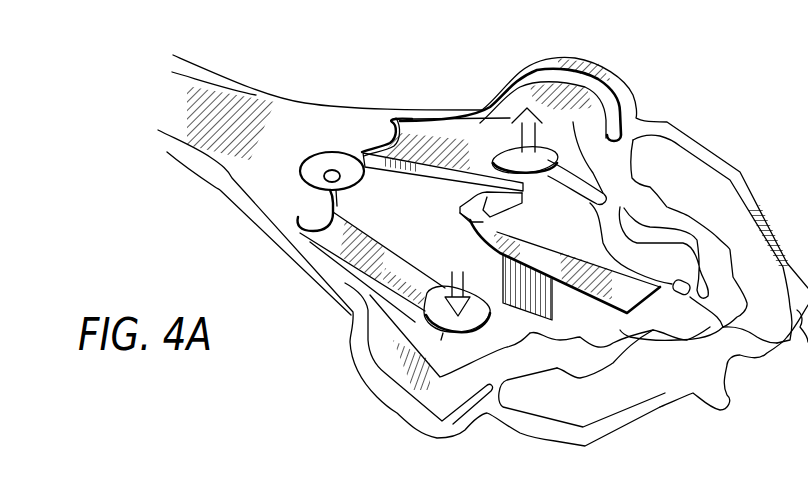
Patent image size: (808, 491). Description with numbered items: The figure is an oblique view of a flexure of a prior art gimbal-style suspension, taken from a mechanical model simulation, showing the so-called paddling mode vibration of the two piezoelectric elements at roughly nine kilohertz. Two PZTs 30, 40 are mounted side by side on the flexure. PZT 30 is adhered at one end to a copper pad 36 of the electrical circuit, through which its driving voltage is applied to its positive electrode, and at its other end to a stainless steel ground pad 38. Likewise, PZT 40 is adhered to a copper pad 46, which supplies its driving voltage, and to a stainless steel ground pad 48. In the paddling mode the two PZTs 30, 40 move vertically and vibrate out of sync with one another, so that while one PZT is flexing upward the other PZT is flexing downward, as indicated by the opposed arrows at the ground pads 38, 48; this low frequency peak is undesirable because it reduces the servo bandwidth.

The PZT 30 is at (388, 262).
The copper pad 36 is at (312, 212).
The stainless steel ground pad 38 is at (437, 303).
The PZT 40 is at (460, 157).
The copper pad 46 is at (381, 143).
The stainless steel ground pad 48 is at (547, 147).